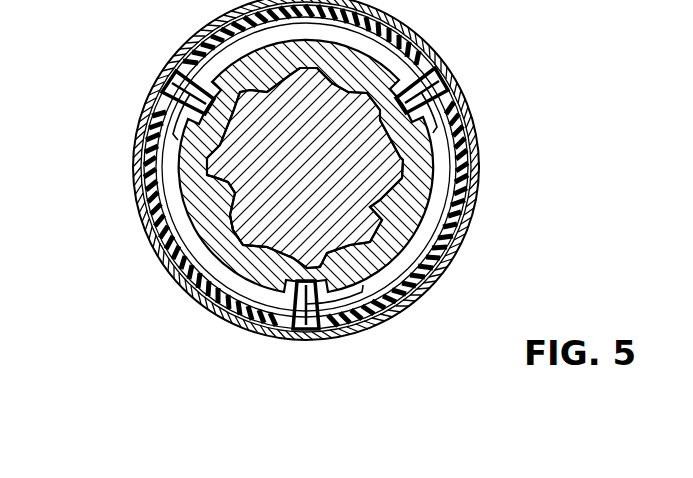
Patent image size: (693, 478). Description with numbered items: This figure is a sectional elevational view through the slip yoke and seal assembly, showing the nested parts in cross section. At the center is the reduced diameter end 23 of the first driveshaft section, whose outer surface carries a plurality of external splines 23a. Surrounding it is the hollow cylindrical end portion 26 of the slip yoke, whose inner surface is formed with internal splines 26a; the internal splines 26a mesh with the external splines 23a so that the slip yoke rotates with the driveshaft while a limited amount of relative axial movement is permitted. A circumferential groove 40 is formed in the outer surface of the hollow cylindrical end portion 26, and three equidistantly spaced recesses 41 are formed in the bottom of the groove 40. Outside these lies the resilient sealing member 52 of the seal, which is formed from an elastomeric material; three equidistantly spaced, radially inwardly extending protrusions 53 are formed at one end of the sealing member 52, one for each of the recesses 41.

The reduced diameter end 23 is at (415, 250).
The external splines 23a is at (240, 238).
The hollow cylindrical end portion 26 is at (203, 203).
The internal splines 26a is at (228, 182).
The circumferential groove 40 is at (440, 200).
The recess 41 is at (182, 74).
The resilient sealing member 52 is at (466, 182).
The protrusion 53 is at (172, 131).